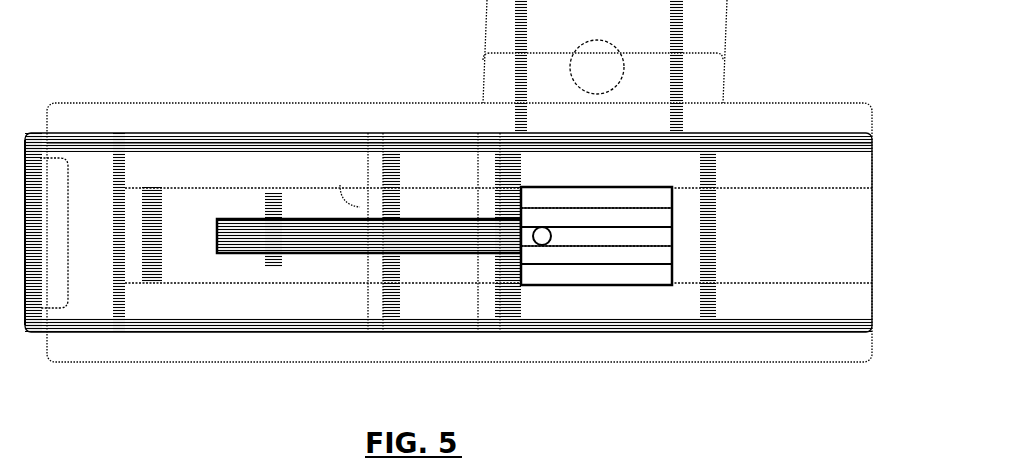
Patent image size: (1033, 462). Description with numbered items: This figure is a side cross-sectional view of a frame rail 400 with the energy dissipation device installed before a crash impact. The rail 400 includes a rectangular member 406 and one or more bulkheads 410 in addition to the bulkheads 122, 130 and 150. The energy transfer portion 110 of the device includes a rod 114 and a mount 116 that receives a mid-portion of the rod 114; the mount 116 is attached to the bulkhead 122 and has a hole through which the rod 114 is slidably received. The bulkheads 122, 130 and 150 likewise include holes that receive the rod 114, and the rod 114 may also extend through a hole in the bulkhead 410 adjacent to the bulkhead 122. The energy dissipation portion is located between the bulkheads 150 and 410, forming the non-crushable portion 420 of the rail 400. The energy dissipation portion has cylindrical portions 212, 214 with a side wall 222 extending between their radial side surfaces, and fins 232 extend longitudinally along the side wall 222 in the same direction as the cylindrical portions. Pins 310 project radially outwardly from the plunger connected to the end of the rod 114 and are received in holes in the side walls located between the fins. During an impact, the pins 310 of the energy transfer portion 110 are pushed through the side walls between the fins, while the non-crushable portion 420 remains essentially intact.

The rail 400 is at (117, 66).
The bulkhead 410 is at (123, 172).
The rectangular member 406 is at (195, 133).
The bulkhead 122 is at (248, 148).
The rod 114 is at (322, 218).
The mount 116 is at (347, 207).
The bulkhead 130 is at (380, 137).
The pins 310 is at (562, 232).
The cylindrical portion 212 is at (612, 200).
The side wall 222 is at (653, 220).
The fin 232 is at (650, 237).
The cylindrical portion 214 is at (598, 272).
The energy transfer portion 110 is at (324, 290).
The bulkhead 150 is at (492, 305).
The non-crushable portion 420 is at (610, 340).